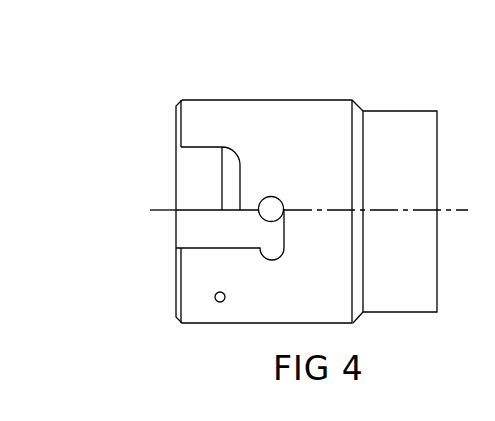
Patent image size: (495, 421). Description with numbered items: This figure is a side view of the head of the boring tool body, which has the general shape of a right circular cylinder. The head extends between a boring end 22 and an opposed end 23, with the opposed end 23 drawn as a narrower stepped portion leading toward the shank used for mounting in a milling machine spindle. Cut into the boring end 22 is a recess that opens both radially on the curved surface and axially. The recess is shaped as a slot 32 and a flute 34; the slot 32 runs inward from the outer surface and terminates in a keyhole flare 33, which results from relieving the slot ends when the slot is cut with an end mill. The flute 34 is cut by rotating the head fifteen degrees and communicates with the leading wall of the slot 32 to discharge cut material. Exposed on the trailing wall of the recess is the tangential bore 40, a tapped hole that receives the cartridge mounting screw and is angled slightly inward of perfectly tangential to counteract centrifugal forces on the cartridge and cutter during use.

The boring end 22 is at (176, 125).
The opposed end 23 is at (363, 165).
The slot 32 is at (186, 232).
The keyhole flare 33 is at (271, 220).
The flute 34 is at (198, 180).
The tangential bore 40 is at (217, 300).